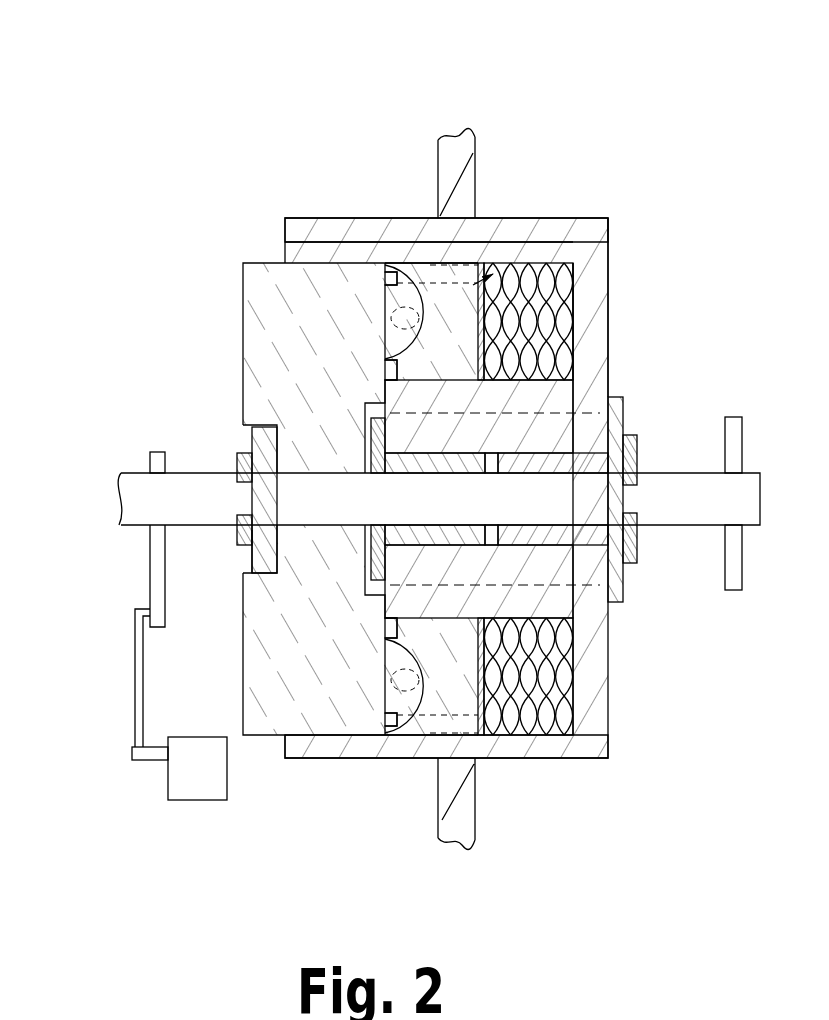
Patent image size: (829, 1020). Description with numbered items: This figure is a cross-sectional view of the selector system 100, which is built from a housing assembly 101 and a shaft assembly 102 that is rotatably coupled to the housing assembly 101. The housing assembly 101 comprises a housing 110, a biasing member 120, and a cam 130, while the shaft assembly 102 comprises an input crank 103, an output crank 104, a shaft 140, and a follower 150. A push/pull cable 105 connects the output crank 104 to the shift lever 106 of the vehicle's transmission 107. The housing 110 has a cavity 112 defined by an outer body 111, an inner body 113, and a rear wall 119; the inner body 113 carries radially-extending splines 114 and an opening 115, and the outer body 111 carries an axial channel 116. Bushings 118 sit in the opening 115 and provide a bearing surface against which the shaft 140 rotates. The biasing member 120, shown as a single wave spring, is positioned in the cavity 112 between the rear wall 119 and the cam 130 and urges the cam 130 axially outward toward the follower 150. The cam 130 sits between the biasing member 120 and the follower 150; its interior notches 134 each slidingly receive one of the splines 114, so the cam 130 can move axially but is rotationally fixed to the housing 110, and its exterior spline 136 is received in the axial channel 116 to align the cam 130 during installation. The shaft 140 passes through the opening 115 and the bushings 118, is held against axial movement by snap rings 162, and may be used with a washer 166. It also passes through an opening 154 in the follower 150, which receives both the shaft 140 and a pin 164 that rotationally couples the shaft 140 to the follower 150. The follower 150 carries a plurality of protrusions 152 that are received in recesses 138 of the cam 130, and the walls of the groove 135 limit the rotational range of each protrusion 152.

The selector system 100 is at (128, 96).
The housing assembly 101 is at (662, 232).
The shaft assembly 102 is at (122, 390).
The input crank 103 is at (725, 590).
The output crank 104 is at (165, 608).
The push/pull cable 105 is at (135, 668).
The shift lever 106 is at (150, 760).
The transmission 107 is at (198, 801).
The housing 110 is at (270, 225).
The outer body 111 is at (330, 218).
The cavity 112 is at (285, 741).
The inner body 113 is at (372, 418).
The splines 114 is at (438, 393).
The opening 115 is at (496, 474).
The axial channel 116 is at (371, 247).
The bushings 118 is at (428, 474).
The rear wall 119 is at (573, 367).
The biasing member 120 is at (608, 325).
The cam 130 is at (517, 262).
The interior notches 134 is at (383, 383).
The groove 135 is at (383, 281).
The exterior spline 136 is at (480, 262).
The recesses 138 is at (413, 316).
The shaft 140 is at (223, 531).
The follower 150 is at (225, 340).
The protrusions 152 is at (425, 262).
The opening 154 is at (242, 432).
The snap rings 162 is at (237, 460).
The pin 164 is at (252, 552).
The washer 166 is at (627, 590).